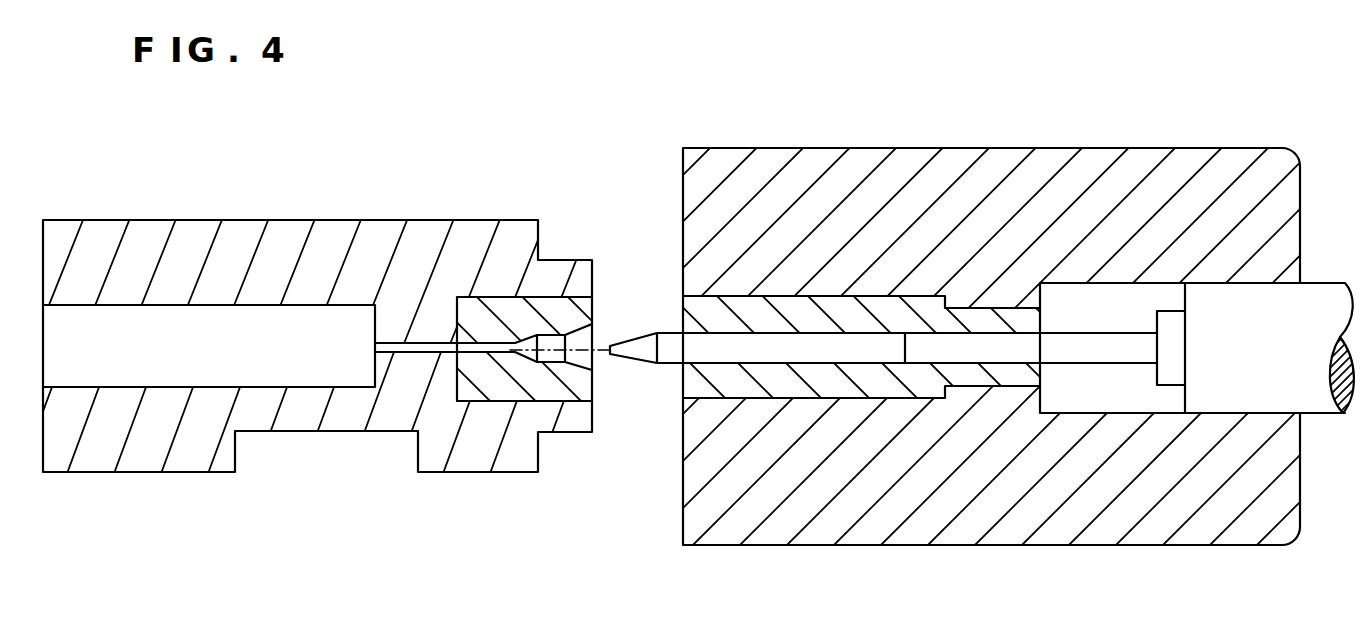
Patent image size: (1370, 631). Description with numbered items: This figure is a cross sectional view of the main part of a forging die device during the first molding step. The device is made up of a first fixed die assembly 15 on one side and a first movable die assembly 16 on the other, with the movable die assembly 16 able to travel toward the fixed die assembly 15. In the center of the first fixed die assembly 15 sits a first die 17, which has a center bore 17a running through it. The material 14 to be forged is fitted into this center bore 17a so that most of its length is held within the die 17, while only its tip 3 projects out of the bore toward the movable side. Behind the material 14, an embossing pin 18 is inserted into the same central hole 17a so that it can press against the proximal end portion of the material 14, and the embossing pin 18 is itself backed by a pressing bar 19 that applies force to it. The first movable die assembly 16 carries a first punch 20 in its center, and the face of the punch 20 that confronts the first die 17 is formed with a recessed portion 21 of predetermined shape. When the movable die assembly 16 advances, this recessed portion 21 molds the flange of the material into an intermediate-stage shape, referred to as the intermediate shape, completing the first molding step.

The tip 3 is at (634, 346).
The material 14 is at (718, 332).
The first fixed die assembly 15 is at (903, 146).
The first movable die assembly 16 is at (274, 218).
The first die 17 is at (730, 386).
The center bore 17a is at (808, 368).
The embossing pin 18 is at (1083, 350).
The pressing bar 19 is at (1302, 318).
The first punch 20 is at (482, 375).
The recessed portion 21 is at (587, 358).